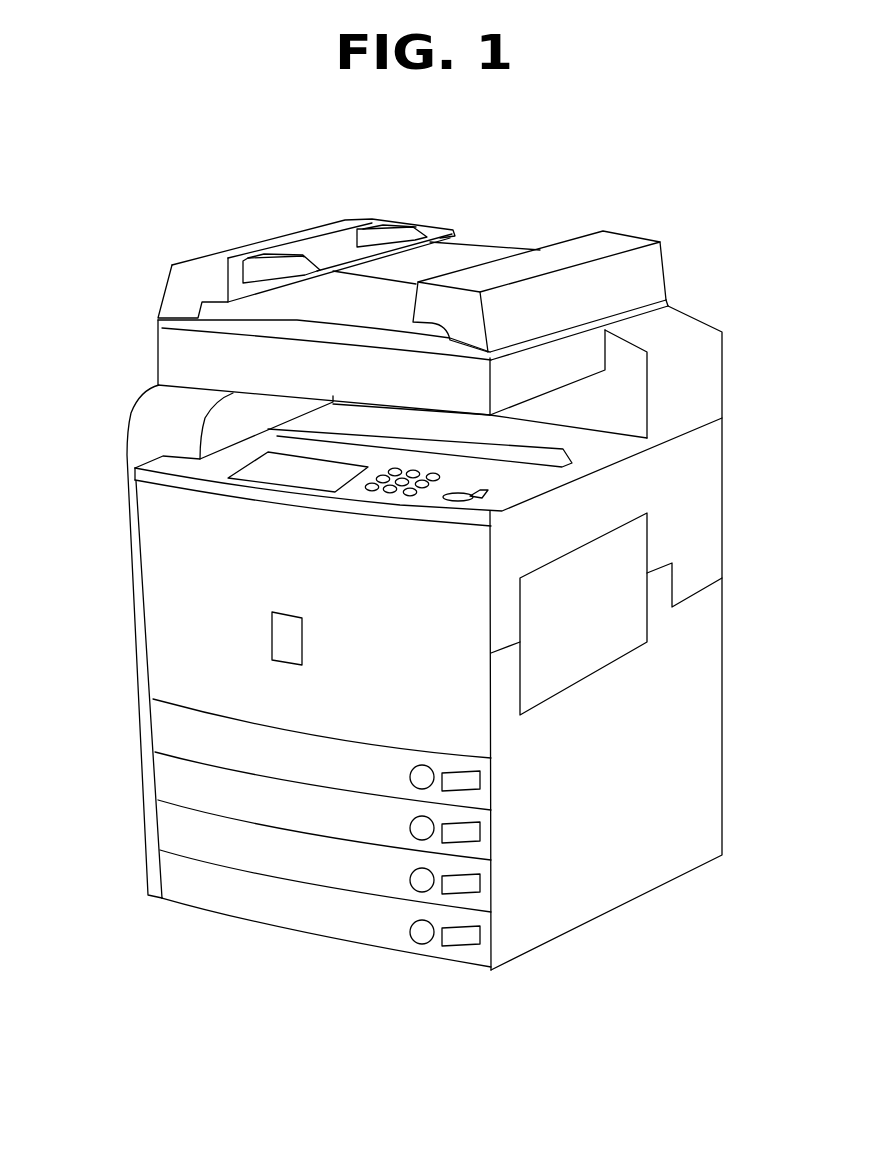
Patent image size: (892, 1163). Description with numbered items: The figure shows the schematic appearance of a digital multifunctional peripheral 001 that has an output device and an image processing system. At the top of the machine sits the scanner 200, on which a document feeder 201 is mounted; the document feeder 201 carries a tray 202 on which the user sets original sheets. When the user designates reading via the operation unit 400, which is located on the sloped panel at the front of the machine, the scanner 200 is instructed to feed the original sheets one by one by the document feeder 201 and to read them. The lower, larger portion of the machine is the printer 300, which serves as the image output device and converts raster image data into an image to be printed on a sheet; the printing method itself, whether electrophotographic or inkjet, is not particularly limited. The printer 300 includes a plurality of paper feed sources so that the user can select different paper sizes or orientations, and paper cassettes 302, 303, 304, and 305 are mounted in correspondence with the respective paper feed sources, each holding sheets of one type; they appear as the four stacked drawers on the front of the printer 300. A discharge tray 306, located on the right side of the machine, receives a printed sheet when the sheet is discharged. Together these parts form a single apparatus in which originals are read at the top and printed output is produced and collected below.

The digital multifunctional peripheral 001 is at (751, 210).
The scanner 200 is at (115, 221).
The document feeder 201 is at (513, 246).
The tray 202 is at (308, 250).
The printer 300 is at (115, 388).
The paper cassette 302 is at (166, 727).
The paper cassette 303 is at (166, 779).
The paper cassette 304 is at (166, 830).
The paper cassette 305 is at (166, 877).
The discharge tray 306 is at (603, 450).
The operation unit 400 is at (353, 492).